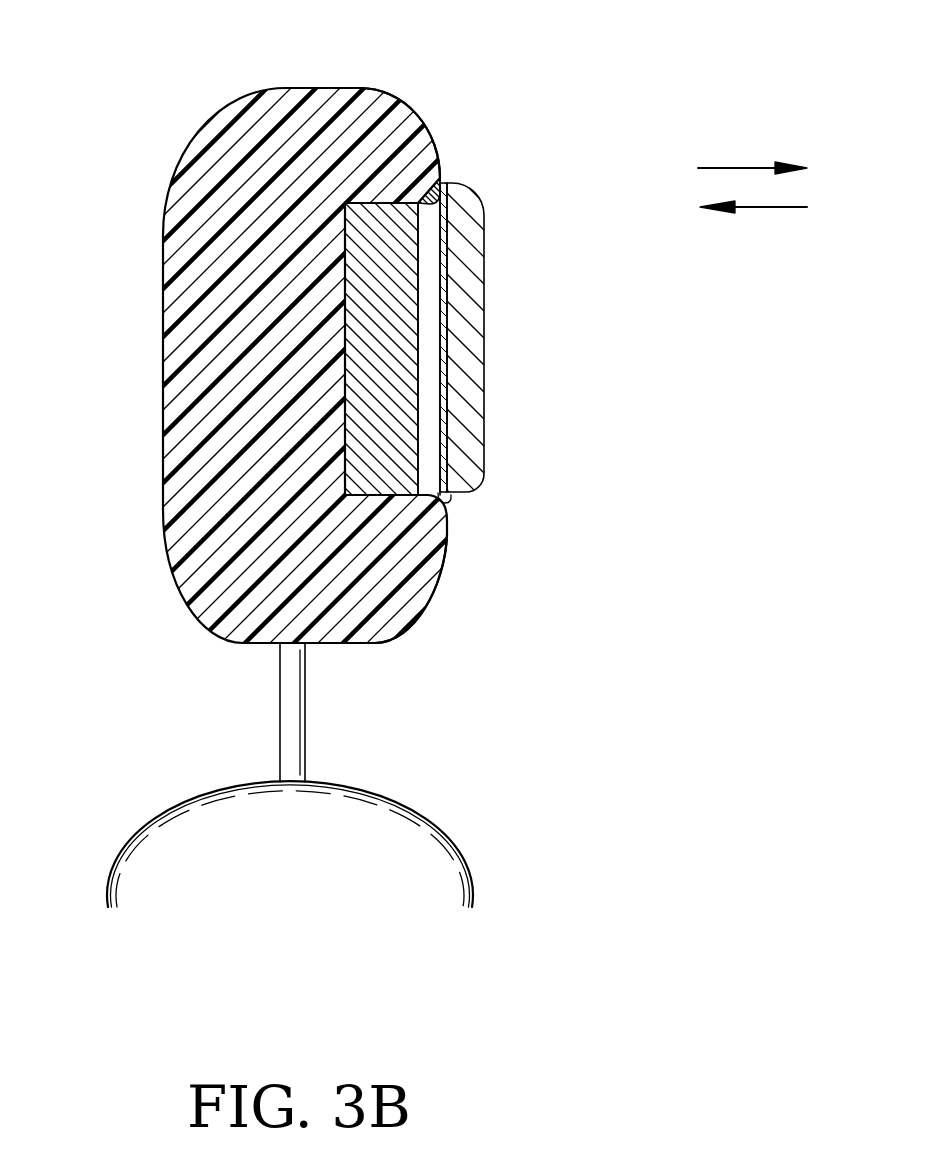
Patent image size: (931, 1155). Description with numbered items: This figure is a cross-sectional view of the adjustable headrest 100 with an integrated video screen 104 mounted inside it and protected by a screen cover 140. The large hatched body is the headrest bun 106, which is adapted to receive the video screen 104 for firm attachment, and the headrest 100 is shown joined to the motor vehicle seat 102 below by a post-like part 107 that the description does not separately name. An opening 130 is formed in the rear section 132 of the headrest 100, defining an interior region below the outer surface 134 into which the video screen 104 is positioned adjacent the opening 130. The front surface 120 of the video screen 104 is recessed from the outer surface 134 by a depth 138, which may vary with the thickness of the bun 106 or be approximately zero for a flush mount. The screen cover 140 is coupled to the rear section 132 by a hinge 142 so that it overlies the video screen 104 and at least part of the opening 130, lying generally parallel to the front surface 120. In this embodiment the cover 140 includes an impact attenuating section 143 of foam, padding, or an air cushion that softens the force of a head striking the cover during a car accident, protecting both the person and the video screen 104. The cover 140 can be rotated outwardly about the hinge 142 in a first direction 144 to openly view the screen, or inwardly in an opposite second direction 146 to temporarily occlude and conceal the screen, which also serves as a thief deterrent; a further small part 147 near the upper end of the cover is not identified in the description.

The adjustable headrest 100 is at (134, 82).
The motor vehicle seat 102 is at (407, 850).
The video screen 104 is at (390, 284).
The headrest bun 106 is at (322, 128).
The stem 107 is at (305, 700).
The front surface 120 is at (420, 240).
The opening 130 is at (548, 335).
The rear section 132 is at (400, 142).
The outer surface 134 is at (437, 592).
The depth 138 is at (468, 82).
The screen cover 140 is at (447, 378).
The hinge 142 is at (445, 498).
The impact attenuating section 143 is at (463, 418).
The first direction 144 is at (742, 167).
The release direction 146 is at (760, 207).
The upper lip 147 is at (443, 182).